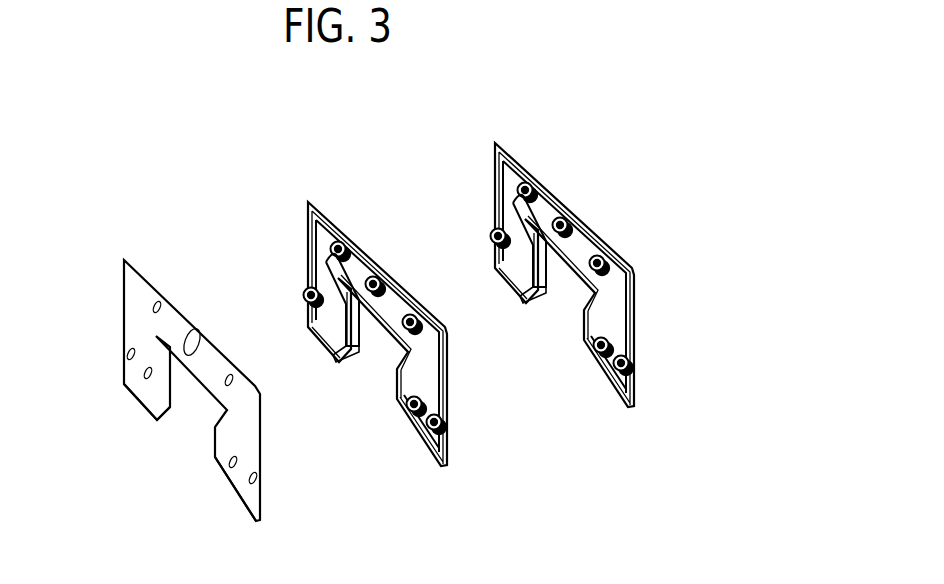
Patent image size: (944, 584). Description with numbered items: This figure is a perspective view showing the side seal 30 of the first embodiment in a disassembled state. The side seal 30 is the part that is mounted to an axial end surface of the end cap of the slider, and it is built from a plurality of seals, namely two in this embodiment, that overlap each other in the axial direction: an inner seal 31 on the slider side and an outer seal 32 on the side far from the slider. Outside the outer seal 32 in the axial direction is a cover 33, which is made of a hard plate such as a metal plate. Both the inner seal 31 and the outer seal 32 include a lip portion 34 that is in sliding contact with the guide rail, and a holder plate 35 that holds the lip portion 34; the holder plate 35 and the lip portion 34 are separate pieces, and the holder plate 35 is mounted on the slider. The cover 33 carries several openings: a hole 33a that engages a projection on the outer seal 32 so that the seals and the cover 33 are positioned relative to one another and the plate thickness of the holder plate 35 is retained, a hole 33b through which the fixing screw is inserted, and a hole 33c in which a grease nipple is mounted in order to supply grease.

The side seal 30 is at (484, 71).
The inner seal 31 is at (483, 147).
The outer seal 32 is at (300, 198).
The cover 33 is at (113, 270).
The hole 33a is at (149, 383).
The hole 33b is at (161, 298).
The hole 33c is at (197, 329).
The lip portion 34 is at (333, 350).
The holder plate 35 is at (322, 252).